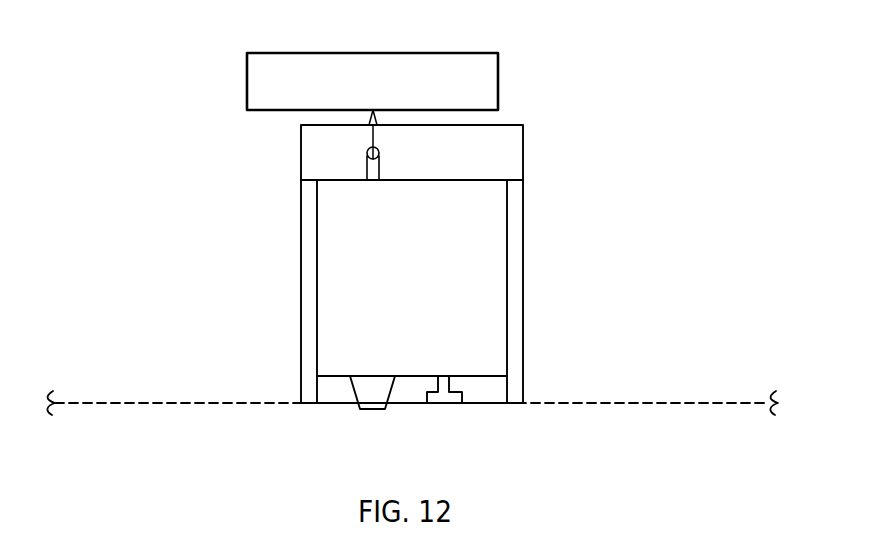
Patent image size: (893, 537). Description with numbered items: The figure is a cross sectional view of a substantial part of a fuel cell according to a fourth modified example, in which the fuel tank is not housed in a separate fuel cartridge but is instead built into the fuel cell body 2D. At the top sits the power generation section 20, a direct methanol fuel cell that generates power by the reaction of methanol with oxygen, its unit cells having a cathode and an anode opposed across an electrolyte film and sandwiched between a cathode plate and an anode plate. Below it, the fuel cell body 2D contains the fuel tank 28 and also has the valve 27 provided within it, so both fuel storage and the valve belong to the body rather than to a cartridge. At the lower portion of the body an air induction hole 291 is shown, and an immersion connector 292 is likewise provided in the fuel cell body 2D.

The power generation section 20 is at (401, 52).
The fuel tank 28 is at (372, 275).
The valve 27 is at (424, 397).
The immersion connector 292 is at (372, 388).
The air induction hole 291 is at (450, 382).
The fuel cell body 2D is at (653, 407).